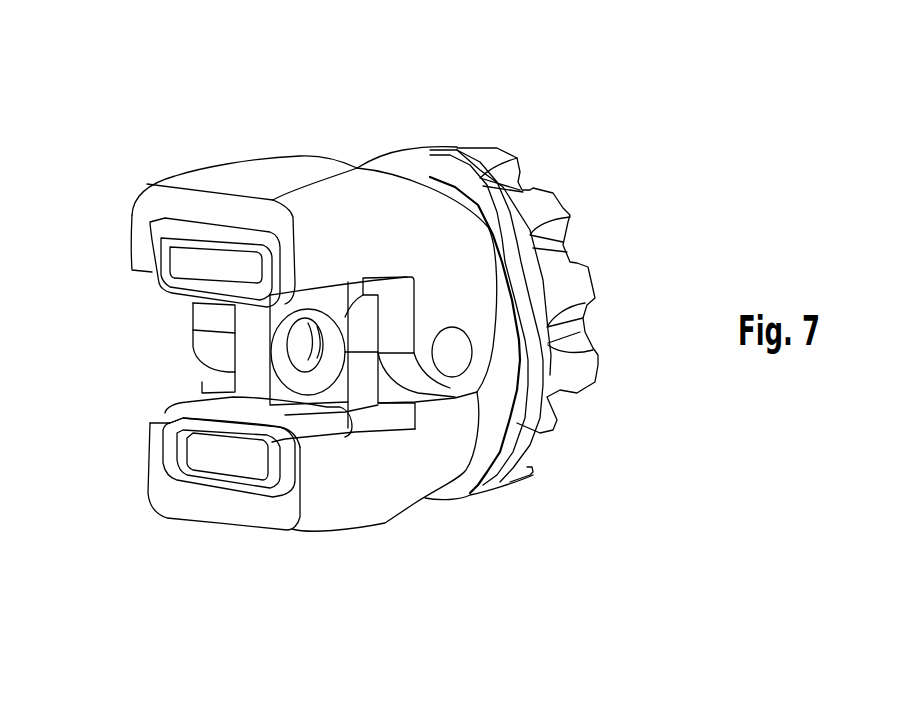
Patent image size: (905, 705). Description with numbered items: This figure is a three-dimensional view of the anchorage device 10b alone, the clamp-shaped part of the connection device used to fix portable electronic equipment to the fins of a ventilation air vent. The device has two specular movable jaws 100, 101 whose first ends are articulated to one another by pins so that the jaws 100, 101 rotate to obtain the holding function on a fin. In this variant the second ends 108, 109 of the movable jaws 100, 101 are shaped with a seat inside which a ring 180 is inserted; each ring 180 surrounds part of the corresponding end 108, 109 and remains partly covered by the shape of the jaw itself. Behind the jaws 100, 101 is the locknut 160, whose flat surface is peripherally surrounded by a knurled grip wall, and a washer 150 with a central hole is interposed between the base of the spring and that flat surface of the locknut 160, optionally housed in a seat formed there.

The anchorage device 10b is at (198, 120).
The movable jaw 100 is at (315, 168).
The movable jaw 101 is at (315, 528).
The second end of movable jaw 108 is at (141, 204).
The second end of movable jaw 109 is at (163, 507).
The washer 150 is at (502, 367).
The locknut 160 is at (573, 370).
The ring 180 is at (172, 407).